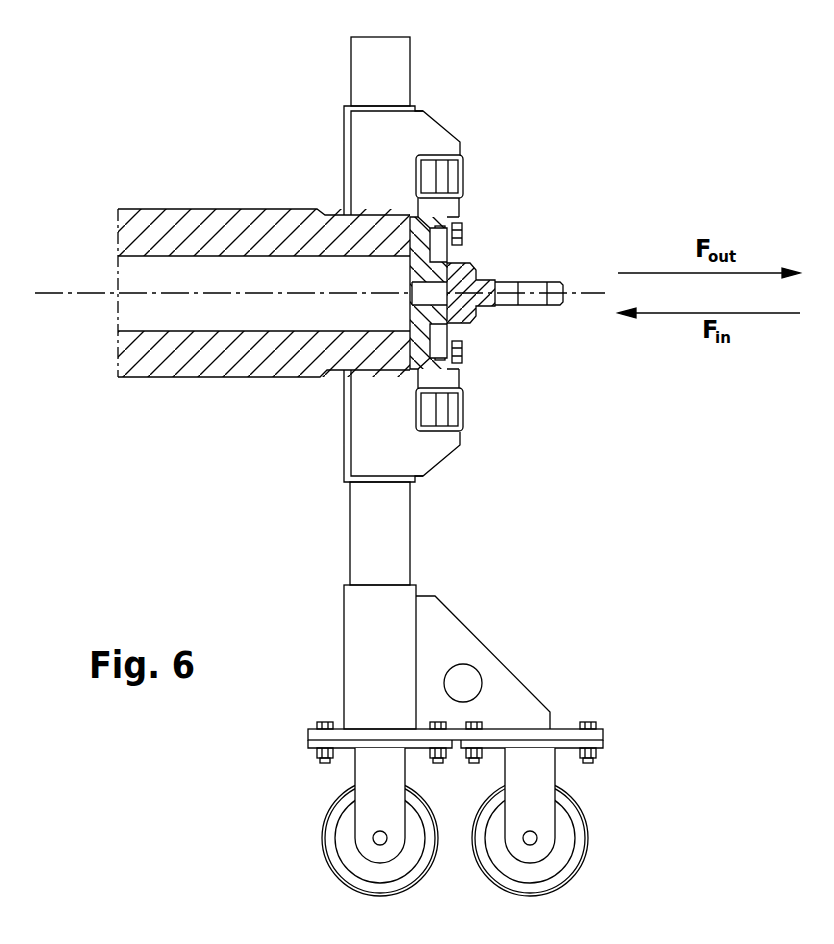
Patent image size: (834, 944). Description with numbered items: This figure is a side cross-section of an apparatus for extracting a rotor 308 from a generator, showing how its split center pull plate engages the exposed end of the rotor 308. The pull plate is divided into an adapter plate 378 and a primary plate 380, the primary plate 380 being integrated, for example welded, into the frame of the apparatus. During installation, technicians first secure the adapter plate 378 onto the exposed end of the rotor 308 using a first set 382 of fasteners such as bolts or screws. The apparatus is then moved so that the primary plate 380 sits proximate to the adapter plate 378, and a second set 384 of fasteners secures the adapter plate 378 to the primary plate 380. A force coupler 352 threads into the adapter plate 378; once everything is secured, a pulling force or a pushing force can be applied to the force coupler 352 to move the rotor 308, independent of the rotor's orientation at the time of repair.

The rotor 308 is at (255, 358).
The force coupler 352 is at (553, 281).
The adapter plate 378 is at (421, 350).
The primary plate 380 is at (440, 228).
The first set of fasteners 382 is at (464, 356).
The second set of fasteners 384 is at (470, 231).